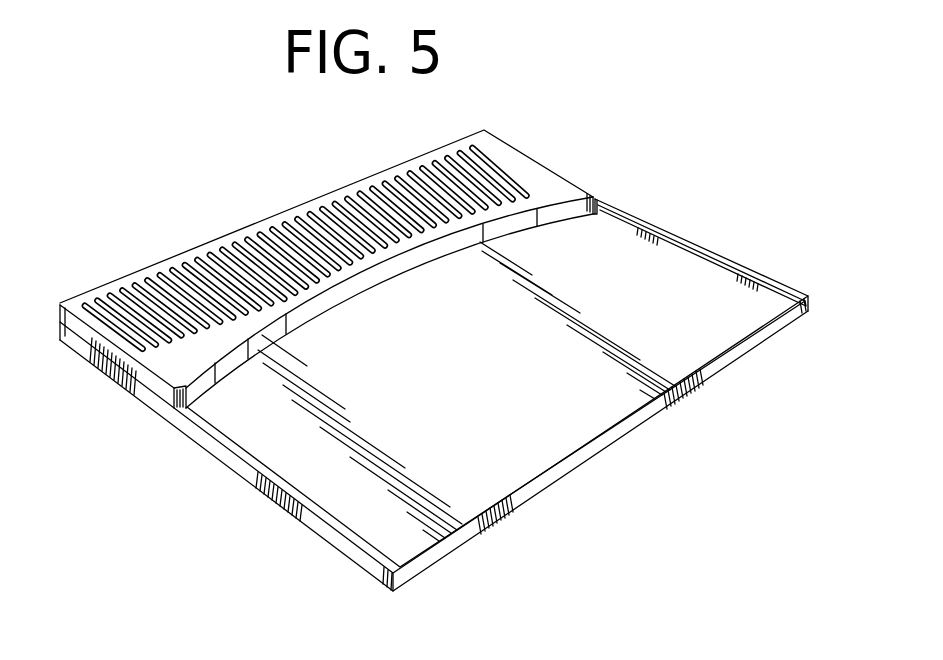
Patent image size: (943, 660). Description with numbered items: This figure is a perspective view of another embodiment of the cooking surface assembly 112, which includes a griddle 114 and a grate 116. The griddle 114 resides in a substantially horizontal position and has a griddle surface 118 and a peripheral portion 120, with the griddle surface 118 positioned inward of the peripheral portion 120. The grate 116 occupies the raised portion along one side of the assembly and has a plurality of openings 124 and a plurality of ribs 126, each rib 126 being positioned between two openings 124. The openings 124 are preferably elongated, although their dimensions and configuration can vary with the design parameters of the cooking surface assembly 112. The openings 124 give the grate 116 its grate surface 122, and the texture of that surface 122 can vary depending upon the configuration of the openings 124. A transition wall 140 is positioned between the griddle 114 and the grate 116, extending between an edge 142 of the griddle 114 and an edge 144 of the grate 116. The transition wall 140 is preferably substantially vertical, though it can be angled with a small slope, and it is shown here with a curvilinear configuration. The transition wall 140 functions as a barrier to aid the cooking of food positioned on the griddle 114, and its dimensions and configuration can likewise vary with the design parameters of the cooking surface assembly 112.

The cooking surface assembly 112 is at (733, 204).
The griddle 114 is at (757, 269).
The grate 116 is at (539, 161).
The griddle surface 118 is at (481, 442).
The peripheral portion 120 is at (808, 296).
The grate surface 122 is at (172, 379).
The openings 124 is at (195, 263).
The ribs 126 is at (250, 240).
The transition wall 140 is at (593, 203).
The edge of the griddle 142 is at (566, 223).
The edge of the grate 144 is at (567, 192).